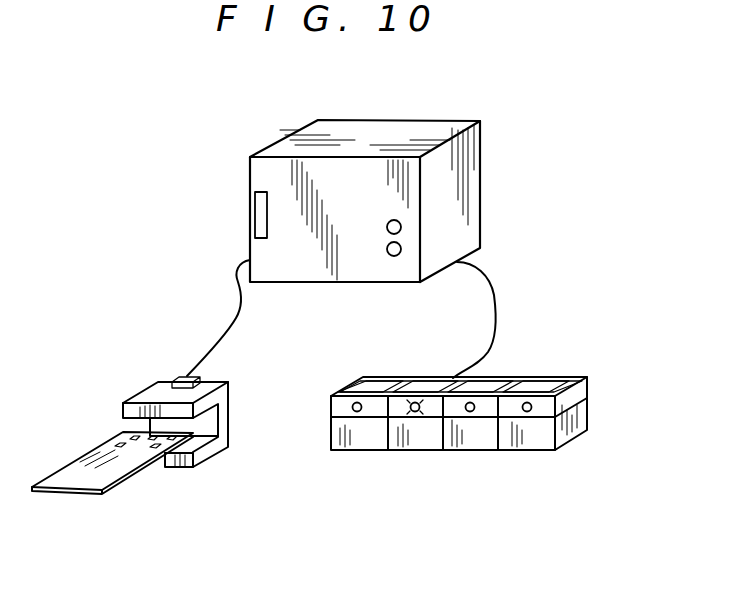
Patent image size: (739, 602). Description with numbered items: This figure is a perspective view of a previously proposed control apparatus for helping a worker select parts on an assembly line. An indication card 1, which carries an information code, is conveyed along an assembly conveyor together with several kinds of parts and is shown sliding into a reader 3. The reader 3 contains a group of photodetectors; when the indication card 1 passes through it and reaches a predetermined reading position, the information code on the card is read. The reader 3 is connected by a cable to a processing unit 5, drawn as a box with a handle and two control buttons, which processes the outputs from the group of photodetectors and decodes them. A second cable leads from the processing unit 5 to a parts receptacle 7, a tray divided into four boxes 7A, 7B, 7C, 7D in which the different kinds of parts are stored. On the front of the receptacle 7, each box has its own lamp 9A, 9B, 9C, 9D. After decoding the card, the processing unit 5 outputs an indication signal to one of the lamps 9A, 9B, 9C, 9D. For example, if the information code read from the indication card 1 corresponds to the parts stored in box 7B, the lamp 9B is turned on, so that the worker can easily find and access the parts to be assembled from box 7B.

The indication card 1 is at (128, 460).
The reader 3 is at (147, 394).
The processing unit 5 is at (454, 121).
The parts receptacle 7 is at (570, 445).
The box 7A is at (365, 444).
The box 7B is at (423, 444).
The box 7C is at (483, 444).
The box 7D is at (545, 444).
The lamp 9A is at (358, 402).
The lamp 9B is at (416, 402).
The lamp 9C is at (471, 402).
The lamp 9D is at (528, 402).